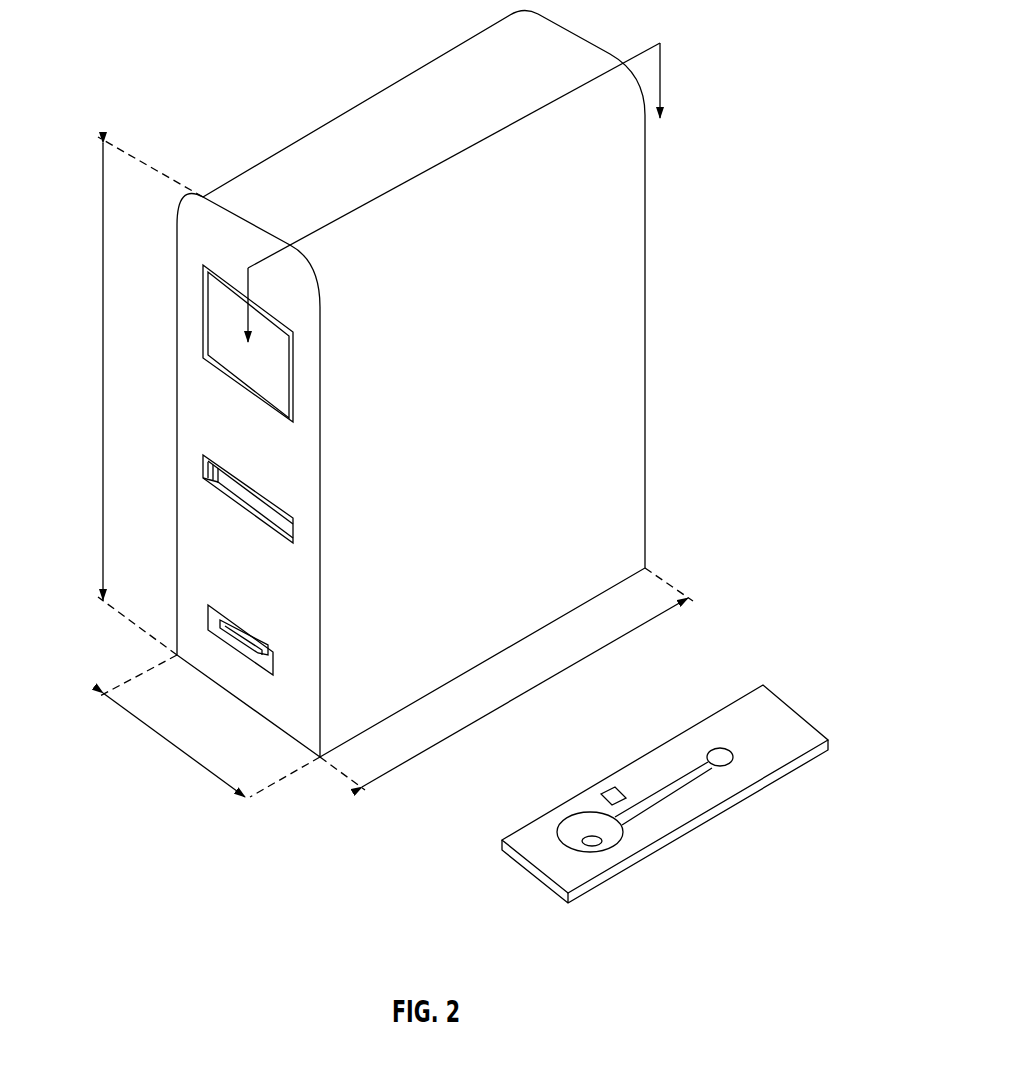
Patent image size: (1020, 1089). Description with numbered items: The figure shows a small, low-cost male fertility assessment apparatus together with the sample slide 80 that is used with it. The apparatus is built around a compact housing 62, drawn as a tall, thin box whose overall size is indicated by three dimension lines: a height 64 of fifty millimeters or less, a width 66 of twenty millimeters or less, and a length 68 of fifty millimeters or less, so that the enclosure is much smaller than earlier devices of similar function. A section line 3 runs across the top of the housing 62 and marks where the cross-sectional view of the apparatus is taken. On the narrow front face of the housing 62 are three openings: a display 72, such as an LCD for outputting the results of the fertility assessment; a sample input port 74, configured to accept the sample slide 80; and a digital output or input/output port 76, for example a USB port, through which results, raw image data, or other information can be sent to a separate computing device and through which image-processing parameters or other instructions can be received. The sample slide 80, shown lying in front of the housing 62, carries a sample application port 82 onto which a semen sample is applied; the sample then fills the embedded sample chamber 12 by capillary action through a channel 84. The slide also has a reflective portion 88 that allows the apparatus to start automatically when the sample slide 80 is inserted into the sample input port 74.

The section line 3 is at (430, 169).
The sample chamber 12 is at (707, 751).
The housing 62 is at (645, 270).
The height 64 is at (103, 372).
The width 66 is at (175, 750).
The length 68 is at (522, 692).
The display 72 is at (227, 357).
The sample input port 74 is at (235, 487).
The digital output or input/output port 76 is at (250, 648).
The sample slide 80 is at (518, 843).
The sample application port 82 is at (567, 822).
The channel 84 is at (675, 780).
The reflective portion 88 is at (607, 788).